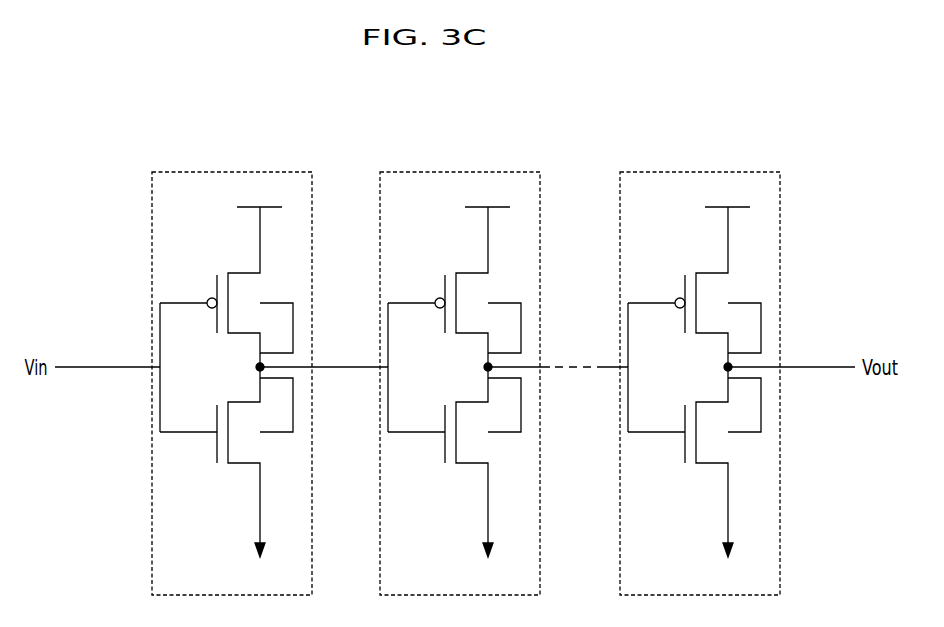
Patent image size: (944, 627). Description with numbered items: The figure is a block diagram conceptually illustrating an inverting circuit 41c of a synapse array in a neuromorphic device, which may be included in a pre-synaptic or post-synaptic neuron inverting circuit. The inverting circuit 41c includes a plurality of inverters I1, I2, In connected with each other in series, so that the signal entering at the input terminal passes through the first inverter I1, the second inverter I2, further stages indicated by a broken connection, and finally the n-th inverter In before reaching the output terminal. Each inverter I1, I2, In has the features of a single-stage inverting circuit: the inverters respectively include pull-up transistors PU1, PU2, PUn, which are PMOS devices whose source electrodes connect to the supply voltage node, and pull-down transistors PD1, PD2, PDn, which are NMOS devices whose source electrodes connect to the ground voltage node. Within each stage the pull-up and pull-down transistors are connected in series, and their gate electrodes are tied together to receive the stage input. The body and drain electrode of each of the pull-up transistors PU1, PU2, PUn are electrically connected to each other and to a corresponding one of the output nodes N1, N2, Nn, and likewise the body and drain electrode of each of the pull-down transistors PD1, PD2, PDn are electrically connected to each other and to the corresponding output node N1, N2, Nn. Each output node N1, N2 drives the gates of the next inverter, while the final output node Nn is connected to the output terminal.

The inverting circuit 41c is at (542, 120).
The first inverter I1 is at (244, 172).
The second inverter I2 is at (472, 172).
The n-th inverter In is at (712, 172).
The pull-up transistor PU1 is at (225, 250).
The pull-up transistor PU2 is at (453, 250).
The pull-up transistor PUn is at (693, 250).
The pull-down transistor PD1 is at (225, 483).
The pull-down transistor PD2 is at (453, 483).
The pull-down transistor PDn is at (693, 483).
The output node N1 is at (248, 366).
The output node N2 is at (476, 366).
The output node Nn is at (716, 366).